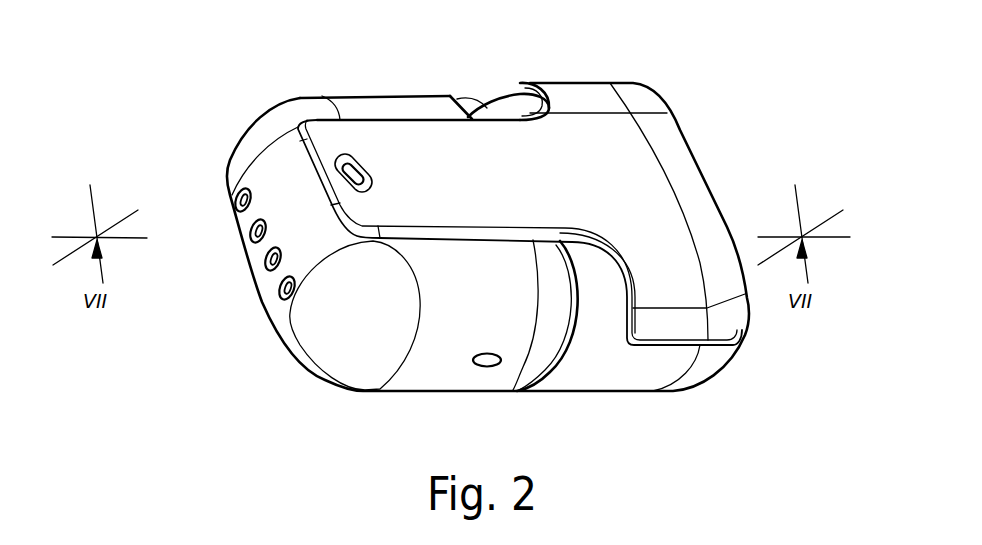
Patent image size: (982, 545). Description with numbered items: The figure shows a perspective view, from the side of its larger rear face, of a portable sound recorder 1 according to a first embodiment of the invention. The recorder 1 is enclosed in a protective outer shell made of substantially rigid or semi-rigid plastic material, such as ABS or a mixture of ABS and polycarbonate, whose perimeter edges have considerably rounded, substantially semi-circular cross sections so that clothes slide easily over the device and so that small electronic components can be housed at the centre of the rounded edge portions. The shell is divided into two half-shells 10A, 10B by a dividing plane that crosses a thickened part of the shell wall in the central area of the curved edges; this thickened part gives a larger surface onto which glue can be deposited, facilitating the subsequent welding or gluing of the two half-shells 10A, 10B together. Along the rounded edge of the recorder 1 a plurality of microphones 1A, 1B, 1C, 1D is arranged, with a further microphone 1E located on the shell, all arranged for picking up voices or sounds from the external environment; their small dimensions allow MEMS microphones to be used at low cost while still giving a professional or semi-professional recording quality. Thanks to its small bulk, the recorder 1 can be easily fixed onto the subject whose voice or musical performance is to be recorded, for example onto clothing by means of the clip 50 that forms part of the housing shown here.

The portable sound recorder 1 is at (456, 226).
The microphone 1A is at (285, 290).
The microphone 1B is at (275, 259).
The microphone 1C is at (256, 233).
The microphone 1D is at (240, 203).
The microphone 1E is at (487, 355).
The half-shell 10A is at (632, 367).
The half-shell 10B is at (347, 350).
The clip 50 is at (608, 158).